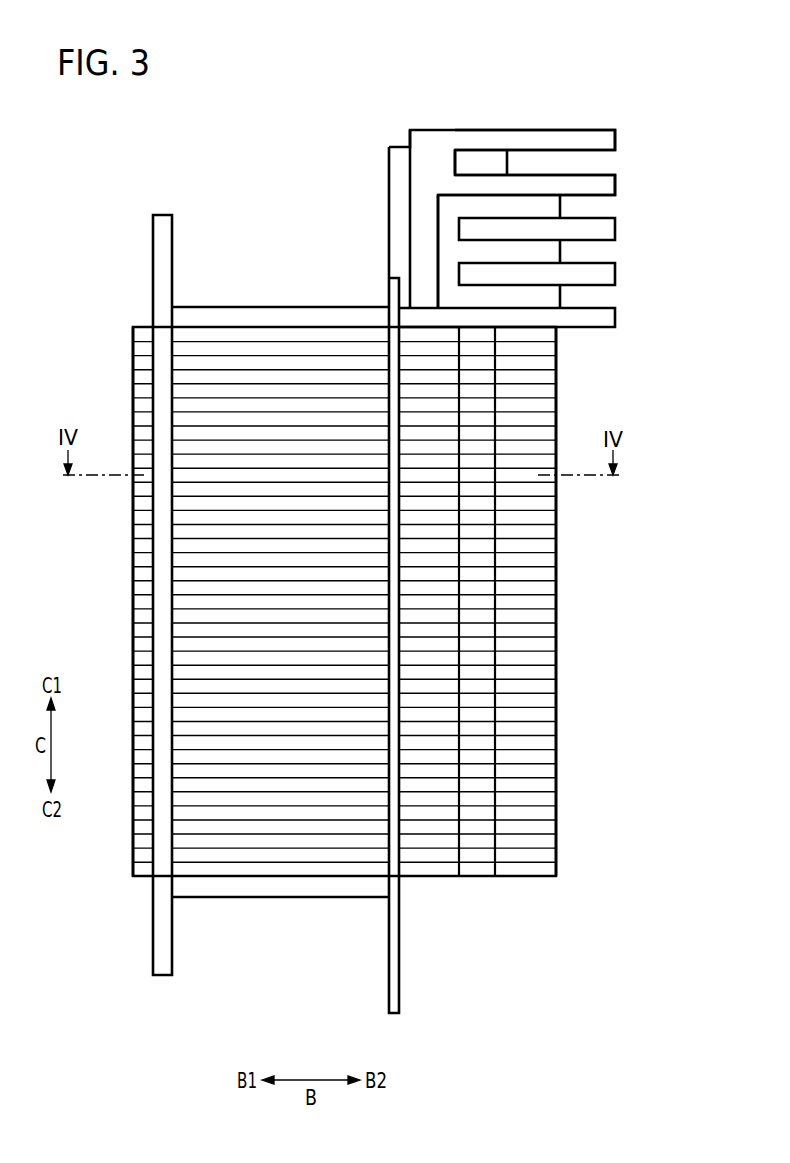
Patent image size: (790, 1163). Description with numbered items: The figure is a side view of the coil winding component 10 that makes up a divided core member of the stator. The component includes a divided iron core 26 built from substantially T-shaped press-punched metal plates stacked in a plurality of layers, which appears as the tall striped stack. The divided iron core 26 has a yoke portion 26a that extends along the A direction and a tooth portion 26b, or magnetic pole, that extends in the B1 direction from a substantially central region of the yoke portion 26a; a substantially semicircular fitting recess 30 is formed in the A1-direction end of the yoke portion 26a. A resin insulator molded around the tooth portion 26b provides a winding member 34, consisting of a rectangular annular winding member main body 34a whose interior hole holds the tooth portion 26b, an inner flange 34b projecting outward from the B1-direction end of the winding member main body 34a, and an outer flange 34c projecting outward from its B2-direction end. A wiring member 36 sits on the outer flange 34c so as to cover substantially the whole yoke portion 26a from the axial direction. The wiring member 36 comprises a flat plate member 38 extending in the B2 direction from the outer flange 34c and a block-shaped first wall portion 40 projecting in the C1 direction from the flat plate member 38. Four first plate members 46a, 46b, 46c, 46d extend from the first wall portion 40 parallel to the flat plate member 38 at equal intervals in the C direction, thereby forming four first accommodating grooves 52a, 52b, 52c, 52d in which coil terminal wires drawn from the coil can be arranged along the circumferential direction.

The coil winding component 10 is at (80, 139).
The divided iron core 26 is at (558, 588).
The yoke portion 26a is at (545, 630).
The tooth portion 26b is at (140, 629).
The fitting recess 30 is at (476, 853).
The winding member 34 is at (350, 1007).
The winding member main body 34a is at (271, 888).
The inner flange 34b is at (172, 963).
The outer flange 34c is at (389, 967).
The wiring member 36 is at (558, 129).
The flat plate member 38 is at (598, 320).
The first wall portion 40 is at (432, 148).
The first plate member 46a is at (602, 275).
The first plate member 46b is at (602, 230).
The first plate member 46c is at (602, 187).
The first plate member 46d is at (602, 142).
The first accommodating groove 52a is at (593, 300).
The first accommodating groove 52b is at (593, 255).
The first accommodating groove 52c is at (593, 210).
The first accommodating groove 52d is at (593, 165).